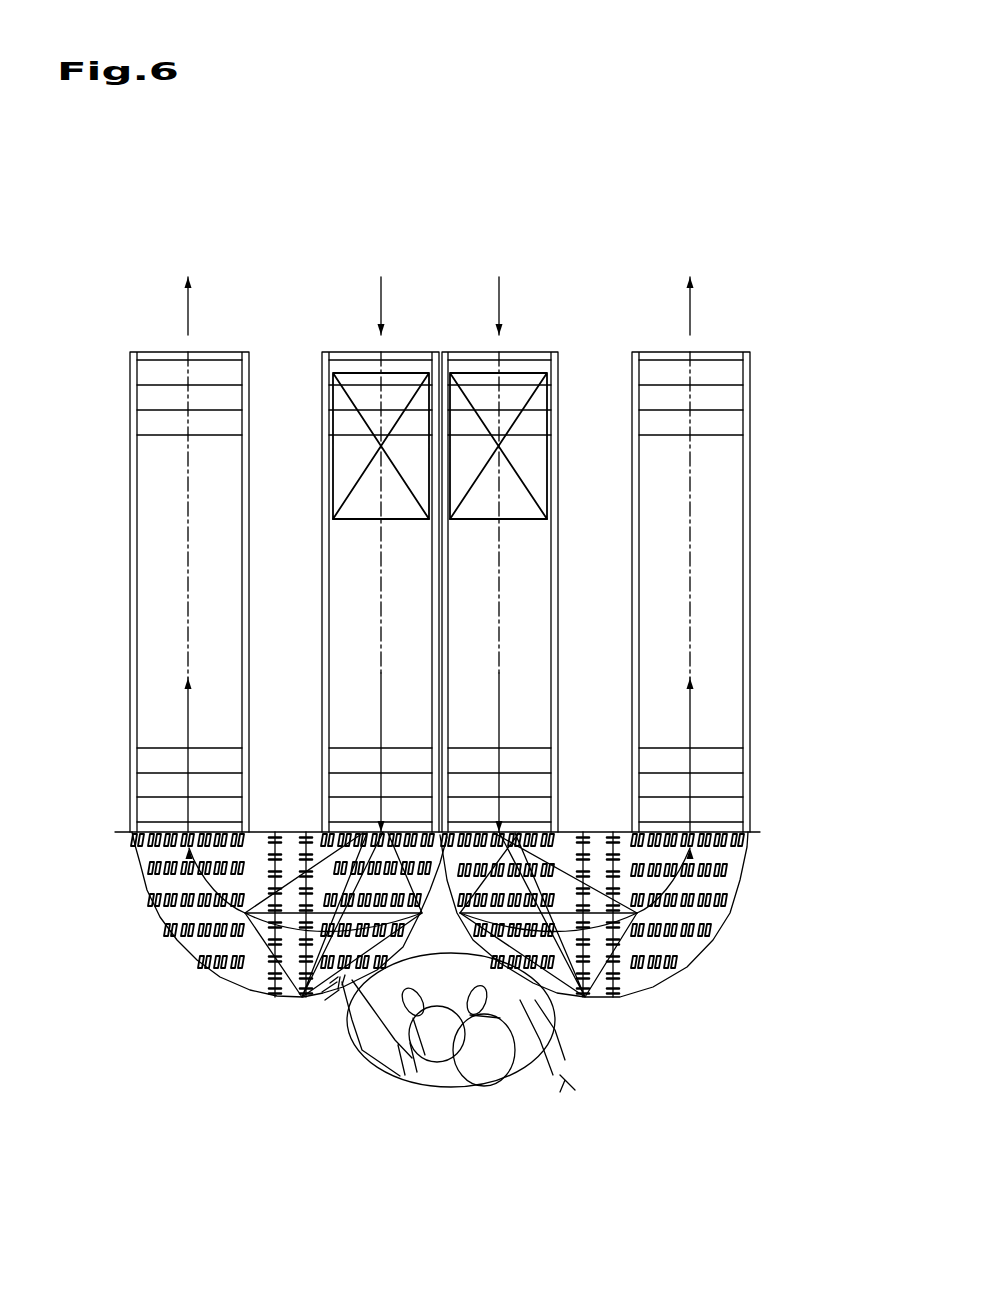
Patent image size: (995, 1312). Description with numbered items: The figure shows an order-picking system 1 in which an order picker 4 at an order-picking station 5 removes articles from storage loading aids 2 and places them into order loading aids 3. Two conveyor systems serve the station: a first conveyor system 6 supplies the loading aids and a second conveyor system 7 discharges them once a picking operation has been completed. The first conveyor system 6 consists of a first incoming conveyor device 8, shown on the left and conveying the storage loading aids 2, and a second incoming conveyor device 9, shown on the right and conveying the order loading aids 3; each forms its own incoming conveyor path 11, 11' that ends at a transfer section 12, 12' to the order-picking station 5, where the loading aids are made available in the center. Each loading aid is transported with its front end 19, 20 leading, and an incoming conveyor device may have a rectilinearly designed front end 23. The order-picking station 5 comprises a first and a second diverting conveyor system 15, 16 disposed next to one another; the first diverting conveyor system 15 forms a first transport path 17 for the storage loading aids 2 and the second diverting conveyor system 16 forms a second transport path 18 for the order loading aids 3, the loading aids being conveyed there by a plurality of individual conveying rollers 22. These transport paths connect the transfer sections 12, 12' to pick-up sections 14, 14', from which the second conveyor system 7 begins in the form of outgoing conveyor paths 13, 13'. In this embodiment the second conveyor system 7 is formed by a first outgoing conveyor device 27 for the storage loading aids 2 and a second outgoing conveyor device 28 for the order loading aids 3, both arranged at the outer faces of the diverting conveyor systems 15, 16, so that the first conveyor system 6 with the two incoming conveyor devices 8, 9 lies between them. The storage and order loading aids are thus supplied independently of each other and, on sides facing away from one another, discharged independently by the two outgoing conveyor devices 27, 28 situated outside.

The order-picking system 1 is at (687, 147).
The storage loading aid 2 is at (367, 492).
The order loading aid 3 is at (517, 492).
The order picker 4 is at (482, 1072).
The order-picking station 5 is at (718, 1073).
The first conveyor system 6 is at (482, 283).
The second conveyor system 7 is at (640, 320).
The first incoming conveyor device 8 is at (355, 333).
The second incoming conveyor device 9 is at (527, 335).
The incoming conveyor path 11 is at (332, 734).
The incoming conveyor path 11' is at (560, 752).
The transfer section 12 is at (333, 865).
The transfer section 12' is at (548, 853).
The outgoing conveyor path 13 is at (128, 705).
The outgoing conveyor path 13' is at (747, 725).
The pick-up section 14 is at (219, 830).
The pick-up section 14' is at (714, 833).
The first diverting conveyor system 15 is at (180, 988).
The second diverting conveyor system 16 is at (738, 943).
The first transport path 17 is at (245, 913).
The second transport path 18 is at (640, 913).
The front end 19 is at (373, 520).
The front end 20 is at (497, 520).
The conveying rollers 22 is at (653, 982).
The front end 23 is at (618, 830).
The first outgoing conveyor device 27 is at (120, 333).
The second outgoing conveyor device 28 is at (755, 347).